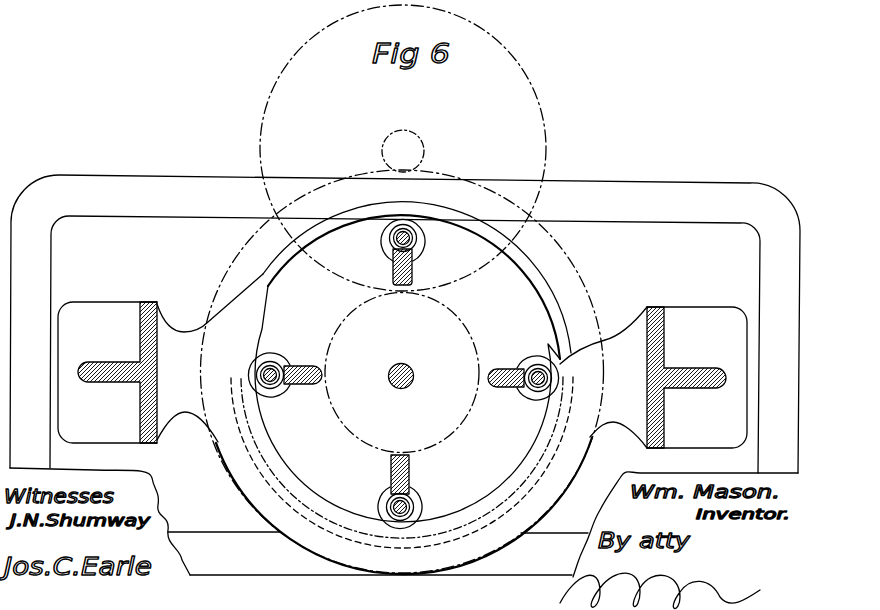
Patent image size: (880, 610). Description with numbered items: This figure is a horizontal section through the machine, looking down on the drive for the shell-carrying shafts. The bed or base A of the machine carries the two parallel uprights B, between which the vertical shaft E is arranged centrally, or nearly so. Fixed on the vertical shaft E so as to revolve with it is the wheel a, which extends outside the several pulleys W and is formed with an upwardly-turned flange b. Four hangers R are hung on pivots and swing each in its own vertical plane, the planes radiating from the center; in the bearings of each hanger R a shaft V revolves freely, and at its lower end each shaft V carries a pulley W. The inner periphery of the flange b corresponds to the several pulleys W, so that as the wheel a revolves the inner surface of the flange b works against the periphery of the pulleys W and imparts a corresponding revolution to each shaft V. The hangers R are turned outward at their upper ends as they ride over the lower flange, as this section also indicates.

The bed or base A is at (405, 373).
The uprights B is at (402, 375).
The wheel a is at (407, 404).
The upwardly-turned flange b is at (402, 375).
The vertical shaft E is at (411, 368).
The hangers R is at (404, 371).
The shaft V is at (414, 502).
The pulley W is at (390, 497).